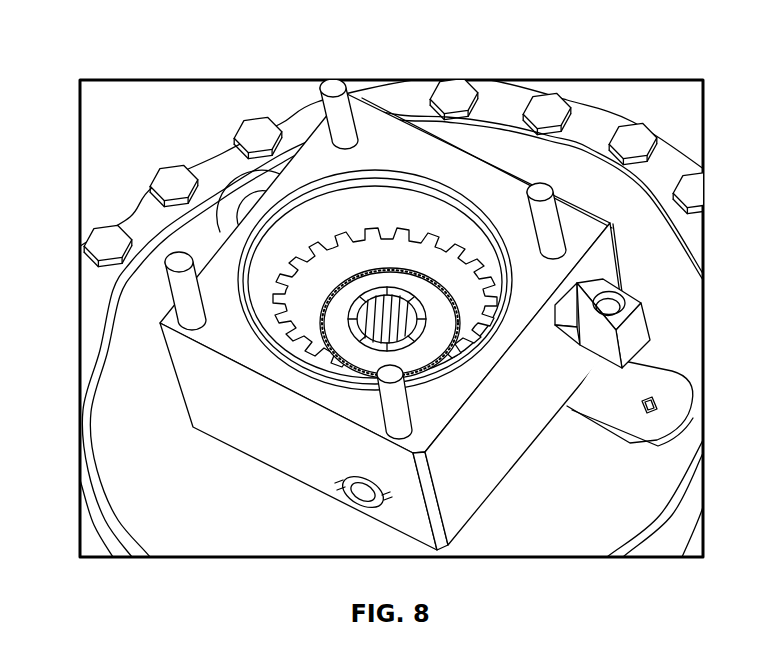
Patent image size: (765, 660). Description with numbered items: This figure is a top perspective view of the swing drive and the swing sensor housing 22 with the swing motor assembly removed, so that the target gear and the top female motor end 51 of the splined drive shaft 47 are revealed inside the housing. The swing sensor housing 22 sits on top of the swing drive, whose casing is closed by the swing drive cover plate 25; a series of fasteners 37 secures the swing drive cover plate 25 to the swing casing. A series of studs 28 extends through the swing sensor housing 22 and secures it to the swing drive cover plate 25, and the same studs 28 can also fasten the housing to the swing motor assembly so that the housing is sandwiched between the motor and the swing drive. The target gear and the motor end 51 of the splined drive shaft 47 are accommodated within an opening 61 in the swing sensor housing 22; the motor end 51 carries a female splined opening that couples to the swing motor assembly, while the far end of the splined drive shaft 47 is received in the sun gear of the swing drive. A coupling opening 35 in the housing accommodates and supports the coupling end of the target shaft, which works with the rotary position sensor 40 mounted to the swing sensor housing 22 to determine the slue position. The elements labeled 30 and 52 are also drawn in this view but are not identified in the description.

The swing sensor housing 22 is at (561, 367).
The swing drive cover plate 25 is at (97, 427).
The studs 28 is at (332, 86).
The clamp block 30 is at (640, 320).
The coupling opening 35 is at (360, 506).
The fasteners 37 is at (170, 170).
The rotary position sensor 40 is at (463, 280).
The splined drive shaft 47 is at (312, 334).
The motor end 51 is at (412, 280).
The hub ring 52 is at (365, 293).
The opening 61 is at (272, 256).